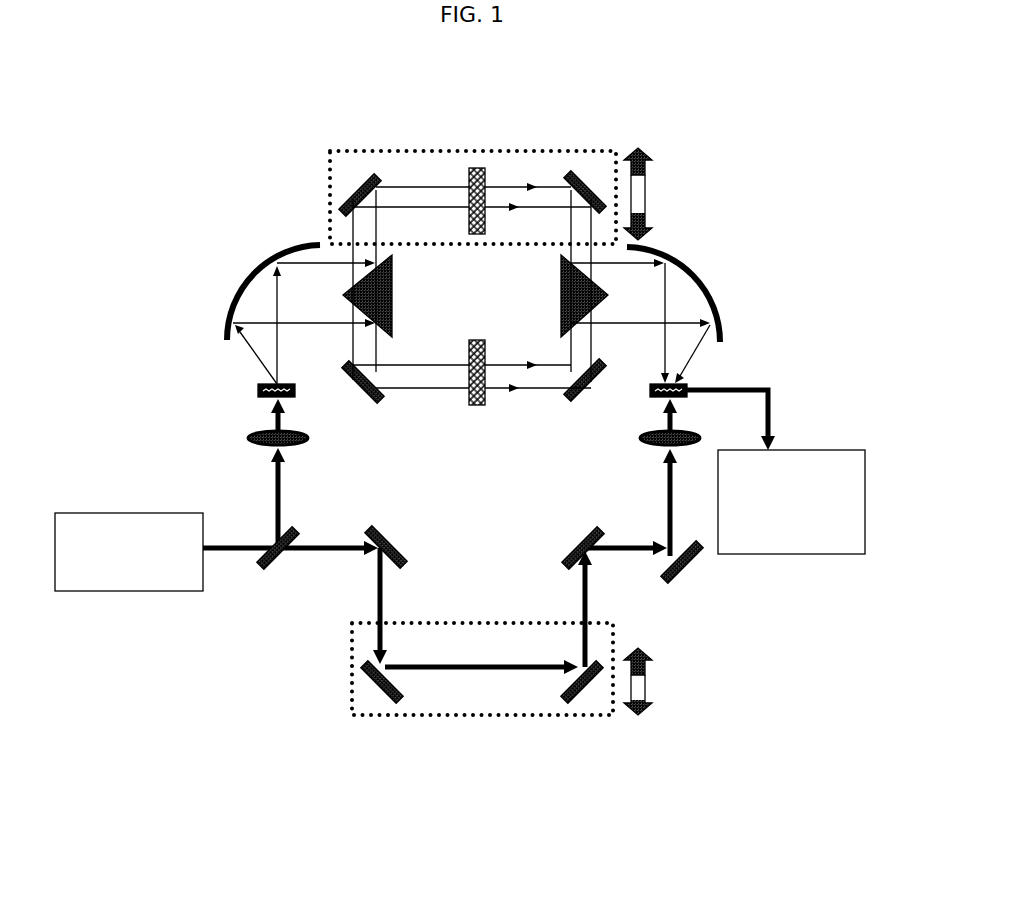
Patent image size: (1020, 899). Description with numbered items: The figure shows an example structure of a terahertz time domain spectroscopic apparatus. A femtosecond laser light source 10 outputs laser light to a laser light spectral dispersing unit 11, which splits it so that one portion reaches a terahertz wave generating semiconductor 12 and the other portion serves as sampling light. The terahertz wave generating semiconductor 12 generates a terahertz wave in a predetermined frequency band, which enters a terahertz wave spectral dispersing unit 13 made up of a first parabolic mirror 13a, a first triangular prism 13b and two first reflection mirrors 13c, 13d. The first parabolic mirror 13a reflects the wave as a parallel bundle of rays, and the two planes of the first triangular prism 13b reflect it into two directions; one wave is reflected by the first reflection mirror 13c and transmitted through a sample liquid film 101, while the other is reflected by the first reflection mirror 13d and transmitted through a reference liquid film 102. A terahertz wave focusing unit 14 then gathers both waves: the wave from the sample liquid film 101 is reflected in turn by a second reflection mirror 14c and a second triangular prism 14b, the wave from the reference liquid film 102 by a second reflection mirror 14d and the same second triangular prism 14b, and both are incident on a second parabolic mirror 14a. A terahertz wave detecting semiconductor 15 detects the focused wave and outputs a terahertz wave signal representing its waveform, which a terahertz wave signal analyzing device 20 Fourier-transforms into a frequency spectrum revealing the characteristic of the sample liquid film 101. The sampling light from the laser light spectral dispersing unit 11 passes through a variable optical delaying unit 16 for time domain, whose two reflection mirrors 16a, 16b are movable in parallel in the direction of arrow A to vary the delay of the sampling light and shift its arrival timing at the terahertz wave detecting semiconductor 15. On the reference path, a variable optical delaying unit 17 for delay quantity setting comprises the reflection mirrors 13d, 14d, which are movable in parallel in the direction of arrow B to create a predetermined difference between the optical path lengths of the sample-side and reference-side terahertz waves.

The femtosecond laser light source 10 is at (124, 513).
The laser light spectral dispersing unit 11 is at (266, 568).
The terahertz wave generating semiconductor 12 is at (256, 392).
The terahertz wave spectral dispersing unit 13 is at (333, 296).
The first parabolic mirror 13a is at (263, 259).
The first triangular prism 13b is at (393, 302).
The first reflection mirror 13c is at (357, 398).
The first reflection mirror 13d is at (352, 186).
The terahertz wave focusing unit 14 is at (624, 282).
The second parabolic mirror 14a is at (700, 268).
The second triangular prism 14b is at (560, 302).
The second reflection mirror 14c is at (590, 397).
The second reflection mirror 14d is at (596, 178).
The terahertz wave detecting semiconductor 15 is at (688, 386).
The variable optical delaying unit for time domain 16 is at (487, 707).
The reflection mirror 16a is at (401, 694).
The reflection mirror 16b is at (563, 694).
The variable optical delaying unit for delay quantity setting 17 is at (355, 150).
The terahertz wave signal analyzing device 20 is at (798, 450).
The sample liquid film 101 is at (479, 406).
The reference liquid film 102 is at (479, 235).